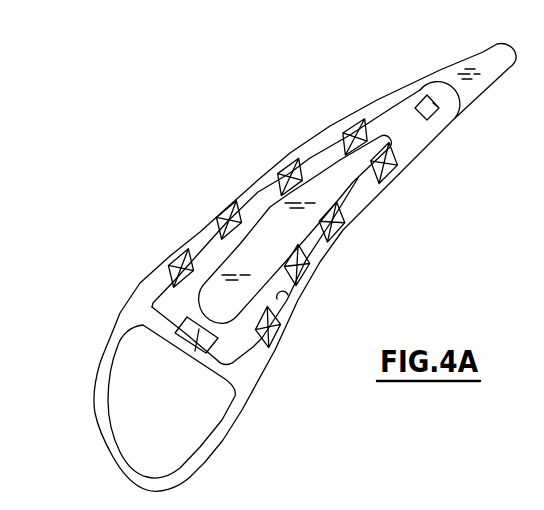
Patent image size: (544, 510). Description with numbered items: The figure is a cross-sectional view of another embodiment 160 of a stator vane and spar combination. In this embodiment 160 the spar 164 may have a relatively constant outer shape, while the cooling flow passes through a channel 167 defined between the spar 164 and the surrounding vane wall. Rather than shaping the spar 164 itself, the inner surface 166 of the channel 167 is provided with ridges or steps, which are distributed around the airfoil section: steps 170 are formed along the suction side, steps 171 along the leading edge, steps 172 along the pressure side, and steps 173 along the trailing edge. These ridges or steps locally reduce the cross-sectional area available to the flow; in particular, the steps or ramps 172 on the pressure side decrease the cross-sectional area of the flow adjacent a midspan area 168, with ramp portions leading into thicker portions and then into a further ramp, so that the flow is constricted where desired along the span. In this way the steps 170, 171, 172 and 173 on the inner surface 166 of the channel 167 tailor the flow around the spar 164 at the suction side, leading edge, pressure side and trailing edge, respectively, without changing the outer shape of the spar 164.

The embodiment 160 is at (248, 134).
The spar 164 is at (277, 238).
The inner surface 166 is at (199, 234).
The channel 167 is at (163, 305).
The midspan area 168 is at (284, 297).
The ridges or steps 170 is at (229, 218).
The ridges or steps 171 is at (190, 352).
The ridges or steps 172 is at (279, 330).
The ridges or steps 173 is at (439, 108).